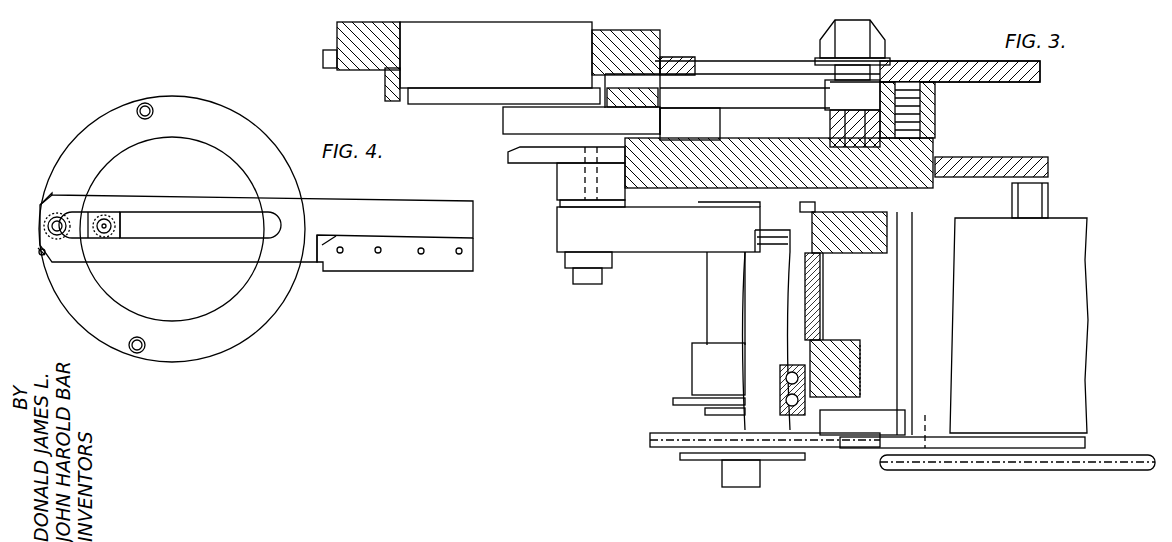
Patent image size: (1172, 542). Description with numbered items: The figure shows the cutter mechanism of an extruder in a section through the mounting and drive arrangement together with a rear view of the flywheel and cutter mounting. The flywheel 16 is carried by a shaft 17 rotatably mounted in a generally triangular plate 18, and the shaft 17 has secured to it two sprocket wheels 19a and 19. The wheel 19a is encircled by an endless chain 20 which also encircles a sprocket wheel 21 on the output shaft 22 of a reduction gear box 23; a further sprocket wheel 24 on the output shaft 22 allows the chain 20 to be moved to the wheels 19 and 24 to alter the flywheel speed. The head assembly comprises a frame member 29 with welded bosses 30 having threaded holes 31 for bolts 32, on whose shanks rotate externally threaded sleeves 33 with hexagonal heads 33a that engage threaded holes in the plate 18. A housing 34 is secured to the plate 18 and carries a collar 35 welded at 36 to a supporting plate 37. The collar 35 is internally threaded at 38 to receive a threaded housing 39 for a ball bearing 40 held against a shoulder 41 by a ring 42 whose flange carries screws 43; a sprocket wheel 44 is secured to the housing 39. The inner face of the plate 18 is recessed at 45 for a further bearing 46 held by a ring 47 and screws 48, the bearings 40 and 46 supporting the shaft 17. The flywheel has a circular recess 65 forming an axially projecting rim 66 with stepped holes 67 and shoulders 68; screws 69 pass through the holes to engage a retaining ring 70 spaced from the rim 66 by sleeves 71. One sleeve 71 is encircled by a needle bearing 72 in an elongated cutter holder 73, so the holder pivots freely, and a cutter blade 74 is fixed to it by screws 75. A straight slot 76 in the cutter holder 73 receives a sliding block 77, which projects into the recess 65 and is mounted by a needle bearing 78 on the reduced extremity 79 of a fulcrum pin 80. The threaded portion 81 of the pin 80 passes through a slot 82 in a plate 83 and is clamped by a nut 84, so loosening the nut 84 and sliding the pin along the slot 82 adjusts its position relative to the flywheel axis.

In FIG. 4, the flywheel 16 is at (295, 145).
In FIG. 3, the flywheel 16 is at (461, 63).
In FIG. 3, the shaft 17 is at (795, 280).
In FIG. 3, the triangular plate 18 is at (662, 225).
In FIG. 3, the sprocket wheel 19 is at (695, 456).
In FIG. 3, the sprocket wheel 19a is at (695, 433).
In FIG. 3, the endless chain 20 is at (962, 425).
In FIG. 3, the sprocket wheel 21 is at (962, 437).
In FIG. 3, the output shaft 22 is at (1018, 437).
In FIG. 3, the reduction gear box 23 is at (1015, 205).
In FIG. 3, the sprocket wheel 24 is at (1140, 455).
In FIG. 3, the frame member 29 is at (1000, 157).
In FIG. 3, the bosses 30 is at (558, 190).
In FIG. 3, the threaded holes 31 is at (557, 200).
In FIG. 3, the bolts 32 is at (602, 280).
In FIG. 3, the externally threaded sleeves 33 is at (590, 252).
In FIG. 3, the hexagonal heads 33a is at (612, 260).
In FIG. 3, the housing 34 is at (718, 293).
In FIG. 3, the collar 35 is at (822, 345).
In FIG. 3, the weld 36 is at (870, 355).
In FIG. 3, the supporting plate 37 is at (912, 262).
In FIG. 3, the internal thread 38 is at (840, 350).
In FIG. 3, the bearing housing 39 is at (858, 400).
In FIG. 3, the ball bearing 40 is at (775, 378).
In FIG. 3, the shoulder 41 is at (790, 365).
In FIG. 3, the ring 42 is at (795, 410).
In FIG. 3, the screws 43 is at (862, 422).
In FIG. 3, the sprocket wheel 44 is at (673, 401).
In FIG. 3, the recess 45 is at (824, 262).
In FIG. 3, the bearing 46 is at (828, 220).
In FIG. 3, the ring 47 is at (740, 145).
In FIG. 3, the screws 48 is at (915, 225).
In FIG. 4, the circular recess 65 is at (260, 175).
In FIG. 3, the circular recess 65 is at (735, 90).
In FIG. 4, the rim 66 is at (252, 155).
In FIG. 3, the stepped holes 67 is at (905, 201).
In FIG. 3, the shoulder 68 is at (935, 132).
In FIG. 4, the screws 69 is at (153, 111).
In FIG. 3, the screws 69 is at (925, 178).
In FIG. 3, the retaining ring 70 is at (605, 78).
In FIG. 4, the sleeves 71 is at (47, 258).
In FIG. 3, the sleeves 71 is at (925, 110).
In FIG. 4, the needle bearing 72 is at (58, 240).
In FIG. 3, the needle bearing 72 is at (935, 122).
In FIG. 4, the cutter holder 73 is at (382, 200).
In FIG. 3, the cutter holder 73 is at (503, 118).
In FIG. 4, the cutter blade 74 is at (418, 246).
In FIG. 4, the screws 75 is at (378, 248).
In FIG. 4, the slot 76 is at (245, 236).
In FIG. 3, the slot 76 is at (684, 85).
In FIG. 4, the block 77 is at (122, 227).
In FIG. 3, the block 77 is at (830, 120).
In FIG. 4, the needle bearing 78 is at (110, 218).
In FIG. 3, the needle bearing 78 is at (841, 201).
In FIG. 4, the reduced extremity 79 is at (112, 215).
In FIG. 3, the reduced extremity 79 is at (852, 95).
In FIG. 3, the fulcrum pin 80 is at (828, 100).
In FIG. 3, the threaded portion 81 is at (822, 55).
In FIG. 3, the slot 82 is at (765, 62).
In FIG. 3, the plate 83 is at (905, 68).
In FIG. 3, the nut 84 is at (880, 40).